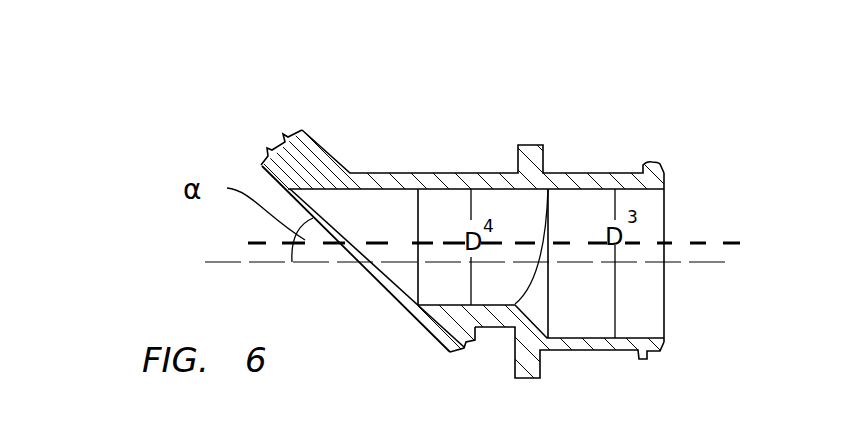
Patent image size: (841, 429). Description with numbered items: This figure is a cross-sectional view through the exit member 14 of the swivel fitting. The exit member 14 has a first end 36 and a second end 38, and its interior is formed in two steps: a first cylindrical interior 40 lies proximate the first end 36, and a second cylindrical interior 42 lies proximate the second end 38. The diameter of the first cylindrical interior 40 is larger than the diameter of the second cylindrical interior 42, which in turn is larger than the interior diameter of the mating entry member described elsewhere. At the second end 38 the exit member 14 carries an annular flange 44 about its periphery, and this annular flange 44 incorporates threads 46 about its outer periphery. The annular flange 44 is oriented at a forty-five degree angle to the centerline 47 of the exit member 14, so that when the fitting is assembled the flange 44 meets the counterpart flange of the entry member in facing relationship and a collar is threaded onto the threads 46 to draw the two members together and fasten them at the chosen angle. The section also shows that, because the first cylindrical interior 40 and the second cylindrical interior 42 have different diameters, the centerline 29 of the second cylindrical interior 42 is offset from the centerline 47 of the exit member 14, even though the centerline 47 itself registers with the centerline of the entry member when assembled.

The exit member 14 is at (604, 125).
The centerline 29 is at (731, 238).
The first end 36 is at (667, 217).
The second end 38 is at (403, 277).
The first cylindrical interior 40 is at (630, 327).
The second cylindrical interior 42 is at (447, 208).
The annular flange 44 is at (317, 137).
The threads 46 is at (283, 138).
The centerline 47 is at (230, 262).